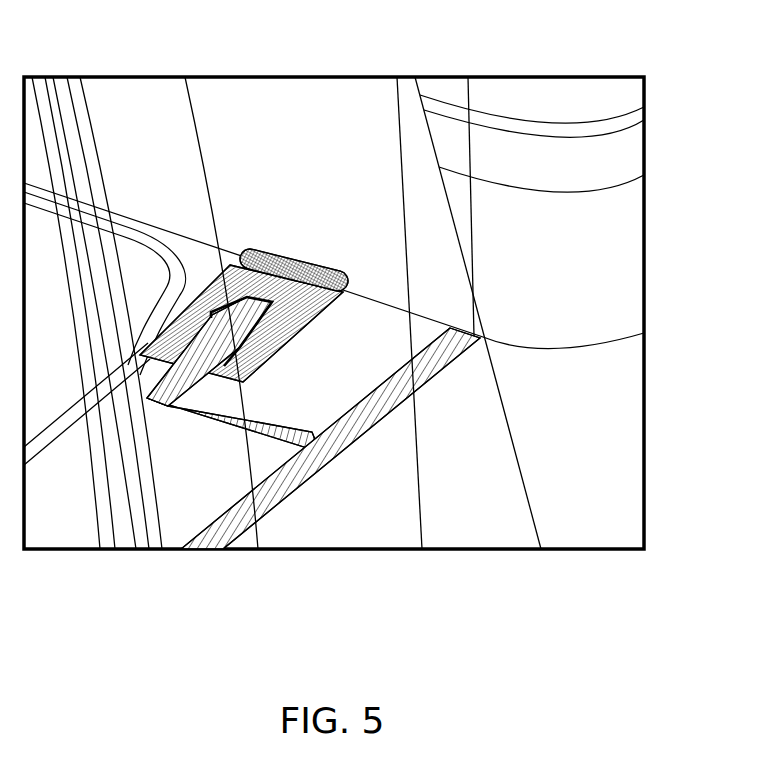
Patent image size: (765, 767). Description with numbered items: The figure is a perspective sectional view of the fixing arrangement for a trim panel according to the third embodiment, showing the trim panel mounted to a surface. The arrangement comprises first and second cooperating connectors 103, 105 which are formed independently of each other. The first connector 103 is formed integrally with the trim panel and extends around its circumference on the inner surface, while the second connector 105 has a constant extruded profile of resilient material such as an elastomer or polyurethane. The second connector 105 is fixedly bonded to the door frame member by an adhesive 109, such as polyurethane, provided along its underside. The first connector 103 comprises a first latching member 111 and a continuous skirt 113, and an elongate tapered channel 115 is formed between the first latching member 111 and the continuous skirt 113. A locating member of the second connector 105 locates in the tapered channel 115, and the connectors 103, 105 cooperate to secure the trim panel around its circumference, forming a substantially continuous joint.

The first connector 103 is at (174, 437).
The second connector 105 is at (308, 357).
The adhesive 109 is at (305, 258).
The first latching member 111 is at (215, 348).
The continuous skirt 113 is at (428, 370).
The elongate tapered channel 115 is at (364, 326).